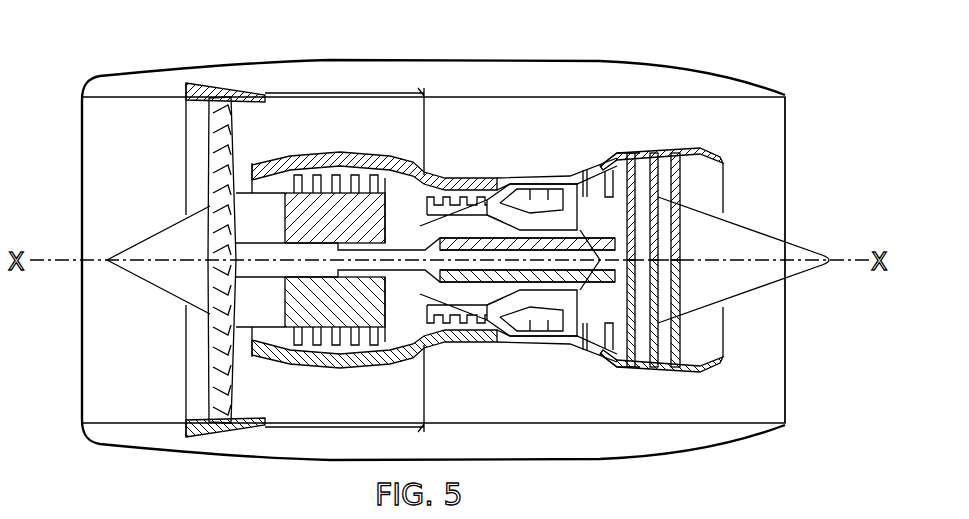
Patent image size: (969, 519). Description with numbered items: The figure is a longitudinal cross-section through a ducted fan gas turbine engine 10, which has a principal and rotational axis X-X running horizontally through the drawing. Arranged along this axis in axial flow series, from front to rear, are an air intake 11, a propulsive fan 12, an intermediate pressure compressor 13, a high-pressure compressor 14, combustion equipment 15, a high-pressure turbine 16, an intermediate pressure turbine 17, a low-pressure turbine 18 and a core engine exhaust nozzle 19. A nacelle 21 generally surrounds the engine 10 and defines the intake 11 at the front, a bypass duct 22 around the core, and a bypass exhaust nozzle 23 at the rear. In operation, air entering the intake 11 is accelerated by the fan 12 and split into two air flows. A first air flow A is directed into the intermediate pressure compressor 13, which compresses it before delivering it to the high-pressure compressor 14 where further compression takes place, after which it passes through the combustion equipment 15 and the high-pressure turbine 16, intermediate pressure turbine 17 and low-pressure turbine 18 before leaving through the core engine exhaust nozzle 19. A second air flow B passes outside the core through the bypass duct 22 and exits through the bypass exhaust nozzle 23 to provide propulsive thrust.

The ducted fan gas turbine engine 10 is at (133, 60).
The air intake 11 is at (108, 97).
The propulsive fan 12 is at (222, 378).
The intermediate pressure compressor 13 is at (350, 363).
The high-pressure compressor 14 is at (465, 190).
The combustion equipment 15 is at (533, 327).
The high-pressure turbine 16 is at (570, 343).
The intermediate pressure turbine 17 is at (600, 163).
The low-pressure turbine 18 is at (620, 372).
The core engine exhaust nozzle 19 is at (714, 150).
The nacelle 21 is at (356, 59).
The bypass duct 22 is at (705, 412).
The bypass exhaust nozzle 23 is at (786, 108).
The first air flow A is at (258, 178).
The second air flow B is at (266, 125).